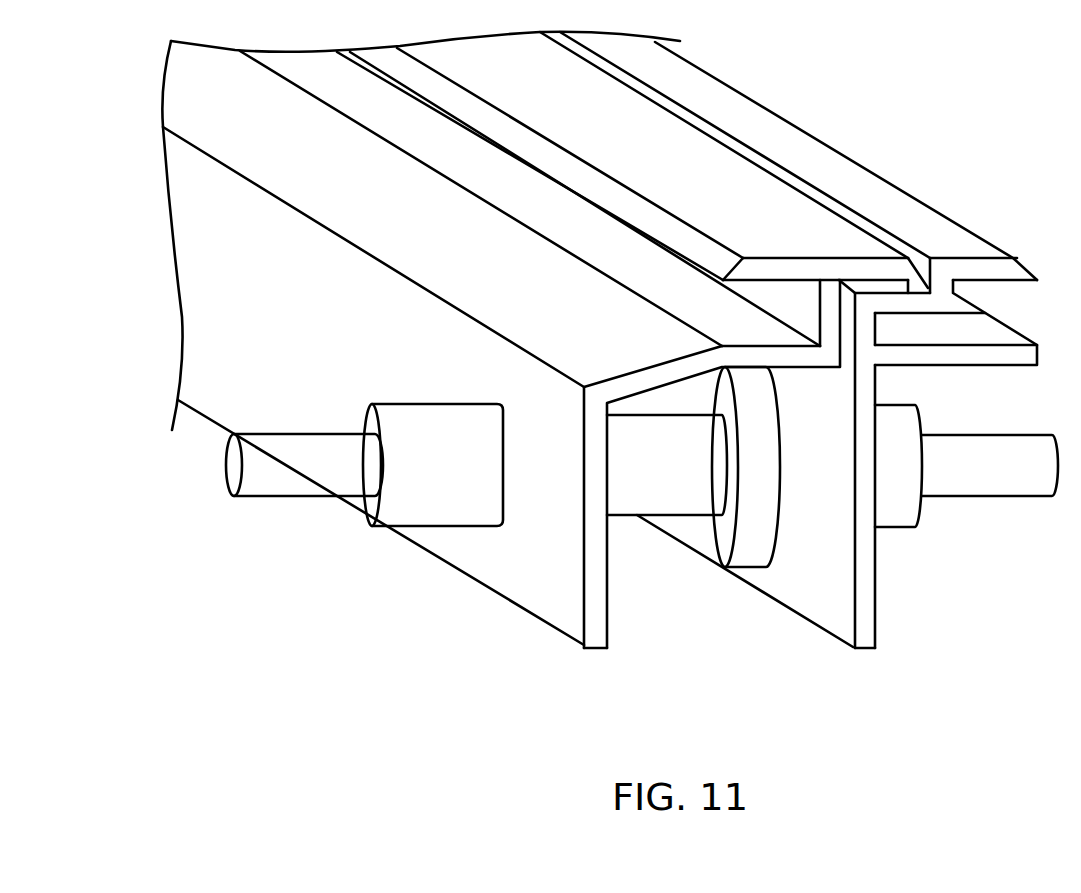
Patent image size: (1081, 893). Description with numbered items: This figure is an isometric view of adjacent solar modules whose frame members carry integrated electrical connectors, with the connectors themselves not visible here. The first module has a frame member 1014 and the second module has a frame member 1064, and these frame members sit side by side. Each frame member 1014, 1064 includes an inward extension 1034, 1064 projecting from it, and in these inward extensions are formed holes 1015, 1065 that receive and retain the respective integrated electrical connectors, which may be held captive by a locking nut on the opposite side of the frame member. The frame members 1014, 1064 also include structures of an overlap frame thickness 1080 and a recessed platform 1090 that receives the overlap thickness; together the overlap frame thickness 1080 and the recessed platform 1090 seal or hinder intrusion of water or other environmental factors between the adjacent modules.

The frame member 1014 is at (472, 597).
The hole 1015 is at (503, 508).
The inward extension 1034 is at (600, 627).
The frame member 1064 is at (867, 627).
The hole 1065 is at (779, 513).
The overlap frame thickness 1080 is at (780, 270).
The recessed platform 1090 is at (907, 288).